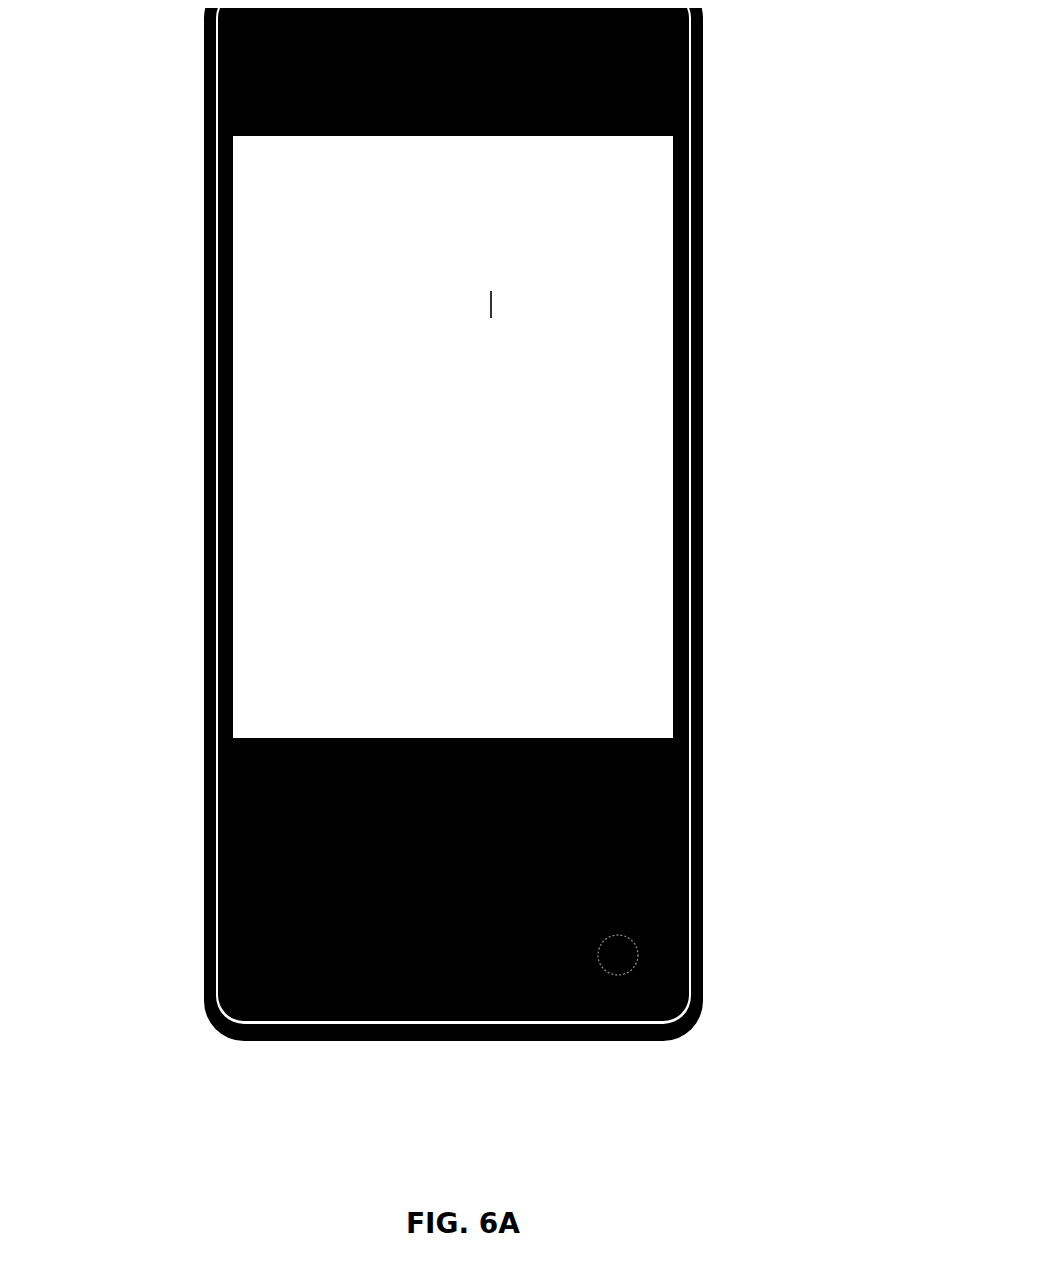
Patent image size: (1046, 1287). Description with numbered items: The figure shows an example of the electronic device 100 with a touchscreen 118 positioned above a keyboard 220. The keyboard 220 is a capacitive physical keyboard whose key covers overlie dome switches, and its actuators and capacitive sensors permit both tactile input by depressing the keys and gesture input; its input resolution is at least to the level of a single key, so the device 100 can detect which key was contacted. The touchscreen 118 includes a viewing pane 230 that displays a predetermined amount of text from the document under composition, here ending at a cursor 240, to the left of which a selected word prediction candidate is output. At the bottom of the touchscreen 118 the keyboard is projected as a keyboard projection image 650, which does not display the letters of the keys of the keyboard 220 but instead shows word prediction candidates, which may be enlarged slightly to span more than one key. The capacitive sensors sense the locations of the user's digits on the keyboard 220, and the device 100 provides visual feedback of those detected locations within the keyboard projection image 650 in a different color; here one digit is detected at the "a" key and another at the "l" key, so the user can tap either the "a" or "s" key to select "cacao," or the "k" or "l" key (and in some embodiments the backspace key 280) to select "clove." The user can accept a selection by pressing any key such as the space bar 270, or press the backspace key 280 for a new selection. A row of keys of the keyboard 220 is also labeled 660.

The mobile electronic device 100 is at (386, 524).
The display 118 is at (391, 446).
The text input field 230 is at (393, 437).
The cursor 240 is at (643, 300).
The prediction candidate bar 650 is at (392, 808).
The virtual keyboard 220 is at (389, 952).
The key row 660 is at (390, 958).
The space key 270 is at (430, 988).
The backspace key 280 is at (672, 935).